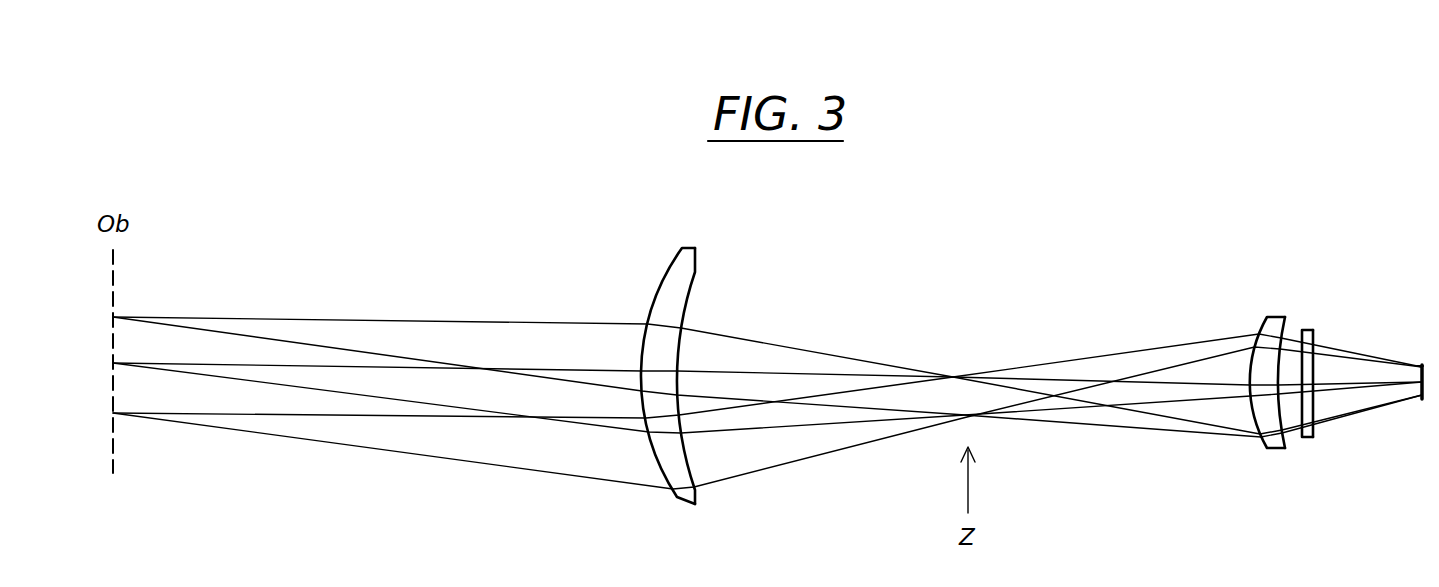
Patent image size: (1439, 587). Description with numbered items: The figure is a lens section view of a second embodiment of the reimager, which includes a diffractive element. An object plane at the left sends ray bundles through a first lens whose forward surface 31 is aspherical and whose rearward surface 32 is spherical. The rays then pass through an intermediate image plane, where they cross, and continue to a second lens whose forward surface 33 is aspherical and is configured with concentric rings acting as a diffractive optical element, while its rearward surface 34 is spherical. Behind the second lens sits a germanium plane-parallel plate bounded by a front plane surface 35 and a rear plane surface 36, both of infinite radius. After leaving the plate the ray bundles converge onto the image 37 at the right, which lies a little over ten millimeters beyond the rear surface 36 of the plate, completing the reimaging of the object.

The forward lens surface 31 is at (660, 286).
The rearward lens surface 32 is at (693, 283).
The forward lens surface 33 is at (1263, 316).
The rearward lens surface 34 is at (1285, 315).
The plate surface 35 is at (1299, 439).
The plate surface 36 is at (1314, 431).
The image 37 is at (1420, 398).